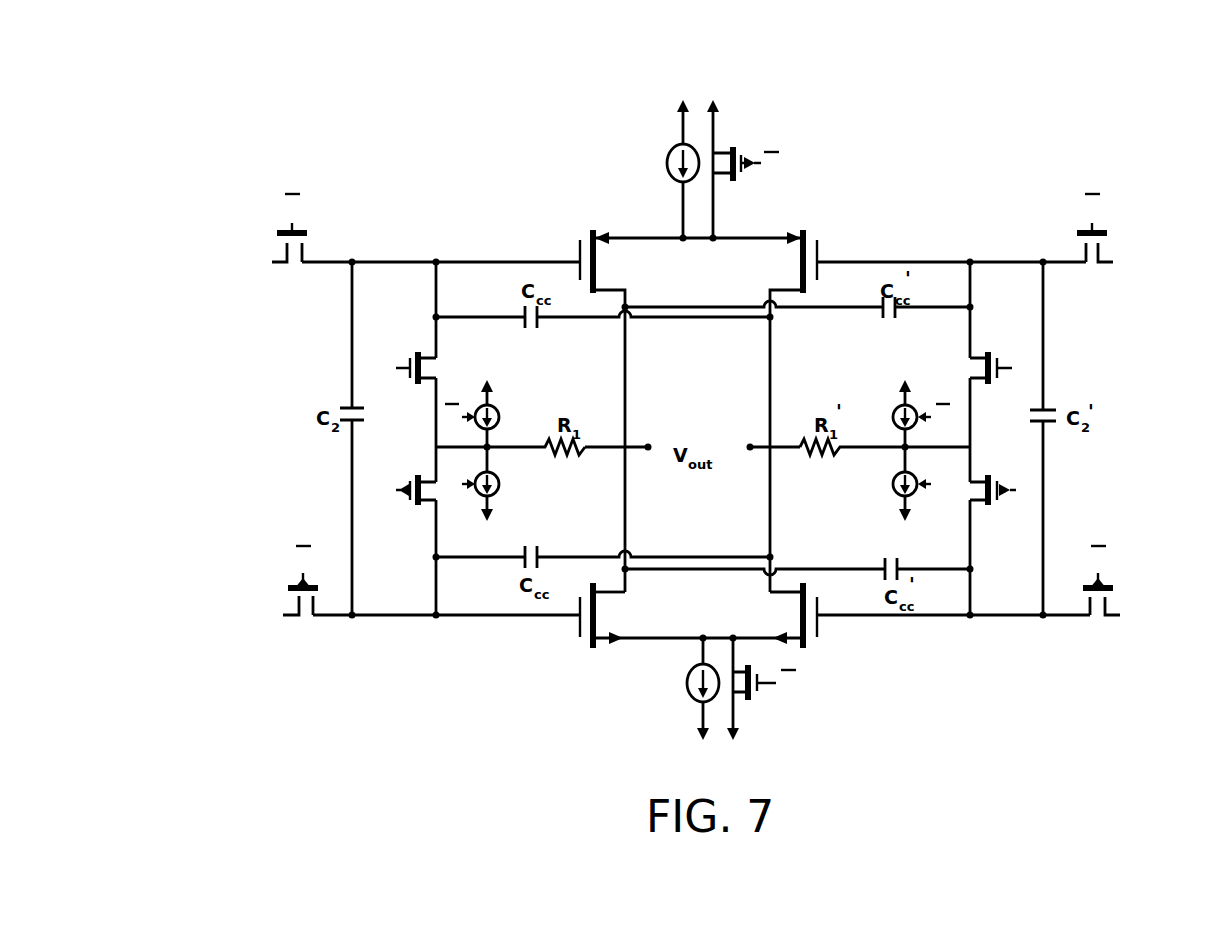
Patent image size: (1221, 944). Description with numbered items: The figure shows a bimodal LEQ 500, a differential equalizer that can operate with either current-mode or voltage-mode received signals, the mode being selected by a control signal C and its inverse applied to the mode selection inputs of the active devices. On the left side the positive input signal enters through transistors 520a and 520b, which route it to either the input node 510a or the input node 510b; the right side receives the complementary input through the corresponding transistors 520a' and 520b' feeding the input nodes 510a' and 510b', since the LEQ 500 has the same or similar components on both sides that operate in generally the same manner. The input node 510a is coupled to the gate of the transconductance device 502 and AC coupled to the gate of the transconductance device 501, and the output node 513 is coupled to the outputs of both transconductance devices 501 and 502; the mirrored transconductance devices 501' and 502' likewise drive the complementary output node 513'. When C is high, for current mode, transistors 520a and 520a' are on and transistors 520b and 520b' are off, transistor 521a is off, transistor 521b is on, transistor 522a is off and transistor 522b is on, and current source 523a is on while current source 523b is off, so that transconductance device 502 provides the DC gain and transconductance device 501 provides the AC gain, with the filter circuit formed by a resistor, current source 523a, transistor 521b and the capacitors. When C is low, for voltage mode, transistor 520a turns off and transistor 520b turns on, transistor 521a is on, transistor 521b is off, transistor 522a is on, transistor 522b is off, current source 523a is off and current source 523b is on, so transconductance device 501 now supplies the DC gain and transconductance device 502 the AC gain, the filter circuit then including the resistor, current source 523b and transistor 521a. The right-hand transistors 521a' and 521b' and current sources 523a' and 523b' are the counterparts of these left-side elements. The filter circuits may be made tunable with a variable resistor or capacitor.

The bimodal LEQ 500 is at (716, 36).
The transconductance device 501 is at (471, 391).
The PMOS transistor Mp' 501' is at (921, 391).
The transconductance device 502 is at (476, 629).
The NMOS transistor Mn' 502' is at (923, 632).
The input node 510a is at (455, 588).
The lower input node (complementary) 510a' is at (951, 585).
The input node 510b is at (406, 285).
The upper input node (complementary) 510b' is at (939, 285).
The output node 513 is at (635, 431).
The output node (complementary) 513' is at (756, 431).
The transistor 520a is at (259, 587).
The transistor 520a' is at (1142, 587).
The transistor 520b is at (246, 234).
The transistor 520b' is at (1137, 234).
The transistor 521a is at (408, 520).
The bias switch transistor (complementary) 521a' is at (1004, 525).
The transistor 521b is at (396, 343).
The bias switch transistor (complementary) 521b' is at (1004, 343).
The transistor 522a is at (750, 699).
The transistor 522b is at (722, 153).
The current source 523a is at (507, 489).
The bias current source (complementary) 523a' is at (885, 489).
The current source 523b is at (507, 410).
The bias current source (complementary) 523b' is at (885, 405).